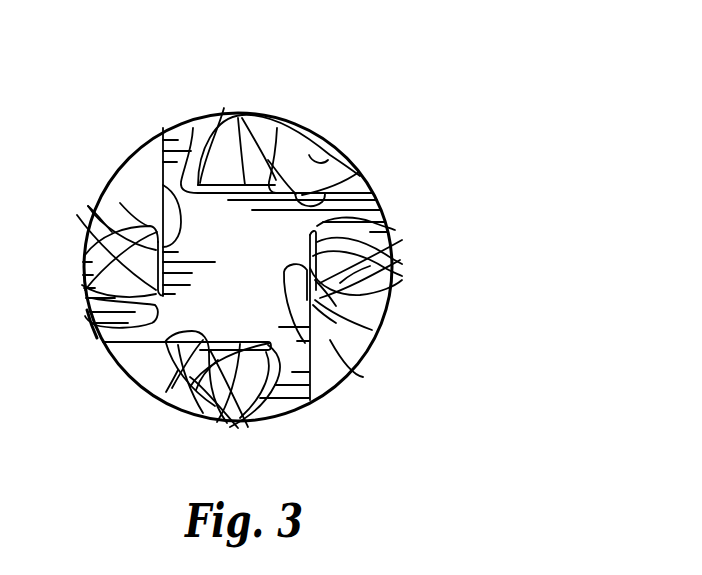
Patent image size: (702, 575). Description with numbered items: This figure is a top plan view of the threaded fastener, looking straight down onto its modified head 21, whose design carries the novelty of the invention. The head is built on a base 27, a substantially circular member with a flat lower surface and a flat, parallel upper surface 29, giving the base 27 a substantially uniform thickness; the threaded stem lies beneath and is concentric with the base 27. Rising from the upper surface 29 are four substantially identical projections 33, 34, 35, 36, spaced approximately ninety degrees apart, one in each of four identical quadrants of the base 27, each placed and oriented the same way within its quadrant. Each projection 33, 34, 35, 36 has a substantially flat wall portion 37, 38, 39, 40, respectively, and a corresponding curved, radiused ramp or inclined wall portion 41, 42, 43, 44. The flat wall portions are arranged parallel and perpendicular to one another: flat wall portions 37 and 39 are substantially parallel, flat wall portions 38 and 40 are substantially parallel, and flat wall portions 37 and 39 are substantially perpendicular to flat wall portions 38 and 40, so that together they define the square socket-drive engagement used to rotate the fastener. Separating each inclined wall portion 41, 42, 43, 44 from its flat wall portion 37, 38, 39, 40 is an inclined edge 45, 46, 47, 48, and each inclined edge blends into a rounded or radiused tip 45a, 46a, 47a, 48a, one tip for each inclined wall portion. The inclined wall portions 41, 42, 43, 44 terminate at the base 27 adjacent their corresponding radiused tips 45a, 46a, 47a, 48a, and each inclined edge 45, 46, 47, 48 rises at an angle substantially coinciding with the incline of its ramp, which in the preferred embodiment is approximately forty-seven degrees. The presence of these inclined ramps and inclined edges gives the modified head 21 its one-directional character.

The modified head 21 is at (504, 114).
The base 27 is at (87, 310).
The upper surface 29 is at (198, 125).
The projection 33 is at (328, 160).
The projection 34 is at (363, 377).
The projection 35 is at (166, 392).
The projection 36 is at (120, 203).
The flat wall portion 37 is at (316, 190).
The flat wall portion 38 is at (318, 285).
The flat wall portion 39 is at (198, 338).
The flat wall portion 40 is at (163, 187).
The inclined wall portion 41 is at (224, 108).
The inclined wall portion 42 is at (370, 266).
The inclined wall portion 43 is at (196, 390).
The inclined wall portion 44 is at (88, 206).
The inclined edge 45 is at (277, 128).
The radiused tip 45a is at (193, 128).
The inclined edge 46 is at (368, 302).
The radiused tip 46a is at (390, 228).
The inclined edge 47 is at (183, 380).
The radiused tip 47a is at (250, 380).
The inclined edge 48 is at (83, 283).
The radiused tip 48a is at (100, 329).